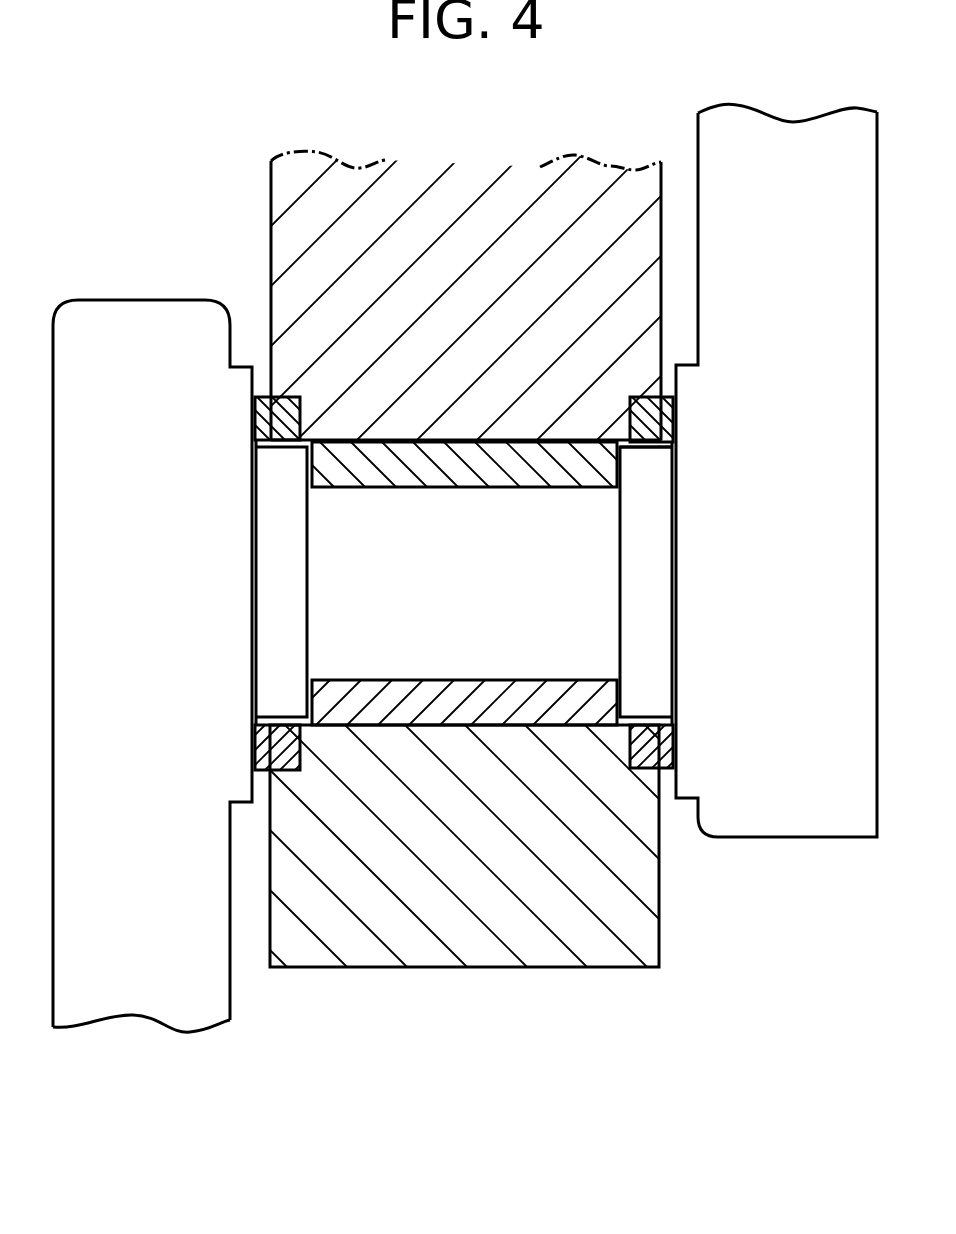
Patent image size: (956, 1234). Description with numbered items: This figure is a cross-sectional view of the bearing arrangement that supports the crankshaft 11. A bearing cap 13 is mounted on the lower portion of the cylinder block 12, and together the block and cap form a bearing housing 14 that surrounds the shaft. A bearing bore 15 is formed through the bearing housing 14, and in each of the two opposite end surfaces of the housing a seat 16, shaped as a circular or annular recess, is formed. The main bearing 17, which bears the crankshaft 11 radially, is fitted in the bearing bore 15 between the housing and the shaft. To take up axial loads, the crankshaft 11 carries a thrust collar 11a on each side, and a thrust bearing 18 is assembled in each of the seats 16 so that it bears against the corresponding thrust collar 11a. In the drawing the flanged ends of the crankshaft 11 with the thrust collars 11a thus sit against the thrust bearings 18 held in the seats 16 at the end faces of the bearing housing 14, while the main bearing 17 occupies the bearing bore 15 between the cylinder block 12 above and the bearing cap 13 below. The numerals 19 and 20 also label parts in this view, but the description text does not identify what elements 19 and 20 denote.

The crankshaft 11 is at (273, 537).
The thrust collar 11a is at (645, 445).
The cylinder block 12 is at (518, 183).
The bearing cap 13 is at (562, 968).
The bearing housing 14 is at (660, 905).
The bearing bore 15 is at (402, 725).
The seat 16 is at (677, 414).
The main bearing 17 is at (460, 727).
The thrust bearing 18 is at (675, 760).
The seal lip 19 is at (677, 420).
The seal 20 is at (677, 745).